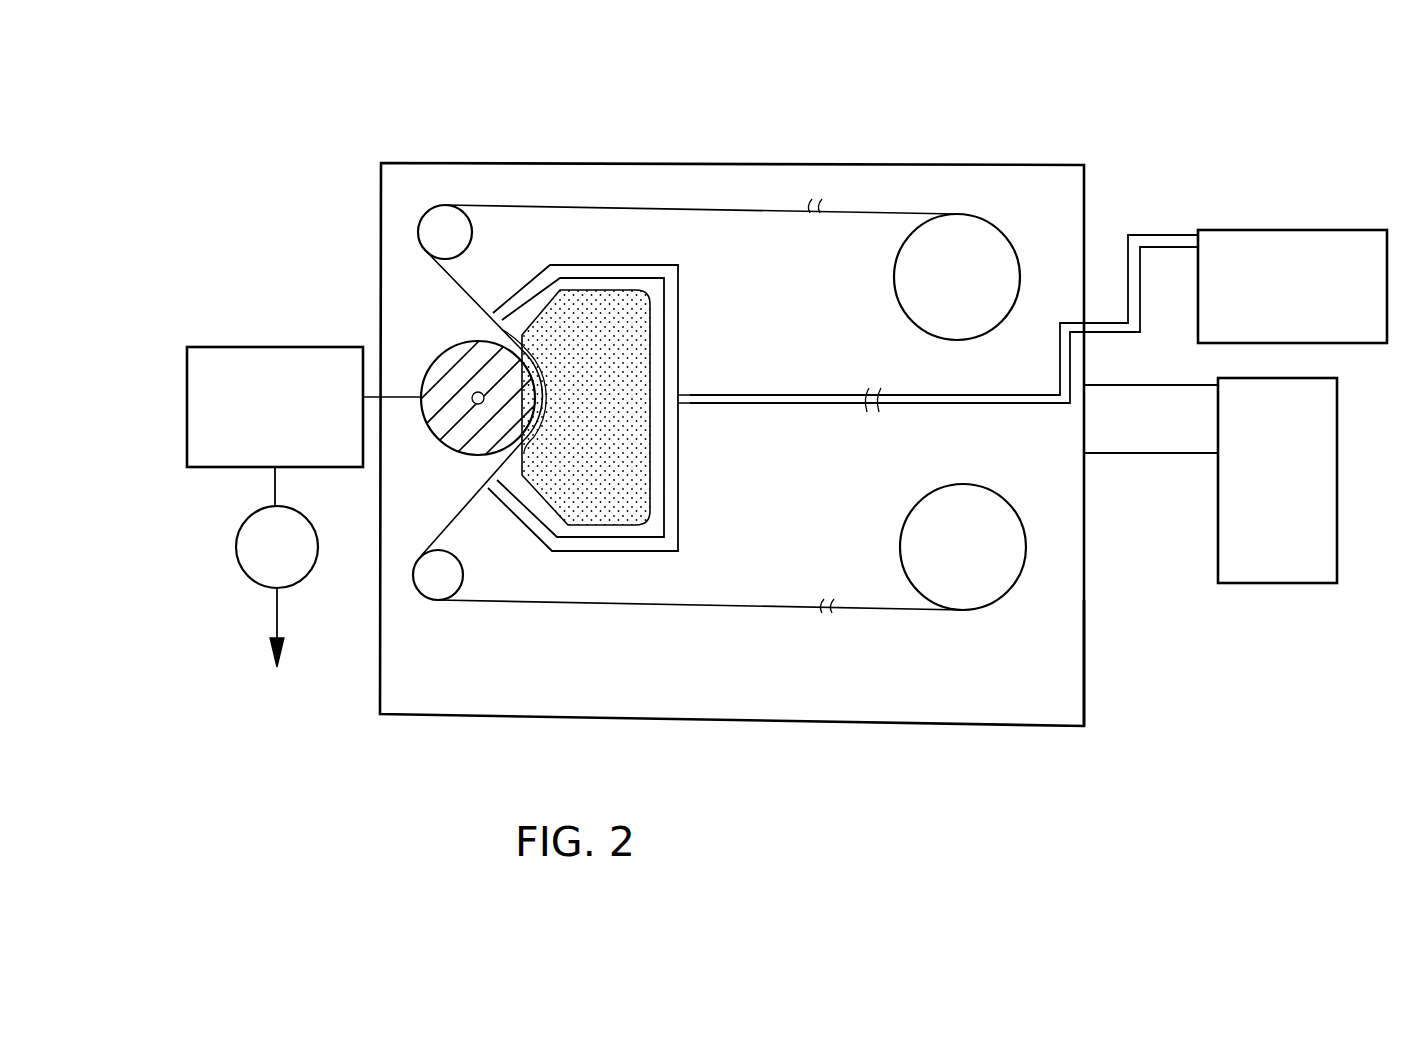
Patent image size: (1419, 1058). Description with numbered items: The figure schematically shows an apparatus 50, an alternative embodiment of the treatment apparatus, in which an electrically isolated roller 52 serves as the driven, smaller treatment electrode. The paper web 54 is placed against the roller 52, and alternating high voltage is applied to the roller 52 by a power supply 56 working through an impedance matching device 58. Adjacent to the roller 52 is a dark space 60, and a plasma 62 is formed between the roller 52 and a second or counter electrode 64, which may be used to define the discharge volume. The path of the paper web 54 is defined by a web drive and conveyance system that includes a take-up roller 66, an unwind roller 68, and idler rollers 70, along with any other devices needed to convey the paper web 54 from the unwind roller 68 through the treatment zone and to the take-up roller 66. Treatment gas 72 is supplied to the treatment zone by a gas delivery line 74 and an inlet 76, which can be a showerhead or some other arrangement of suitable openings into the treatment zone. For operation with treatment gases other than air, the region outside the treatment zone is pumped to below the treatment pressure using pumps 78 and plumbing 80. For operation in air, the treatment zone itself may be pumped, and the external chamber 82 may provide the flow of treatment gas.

The apparatus 50 is at (893, 744).
The electrically isolated roller 52 is at (433, 374).
The paper web 54 is at (622, 606).
The power supply 56 is at (240, 524).
The impedance matching device 58 is at (236, 345).
The dark space 60 is at (512, 336).
The plasma 62 is at (565, 318).
The second or counter electrode 64 is at (673, 294).
The take-up roller 66 is at (922, 523).
The unwind roller 68 is at (982, 250).
The idler rollers 70 is at (446, 215).
The treatment gas 72 is at (1230, 228).
The gas delivery line 74 is at (790, 405).
The inlet 76 is at (668, 398).
The pumps 78 is at (1338, 418).
The plumbing 80 is at (1152, 438).
The external chamber 82 is at (1084, 692).